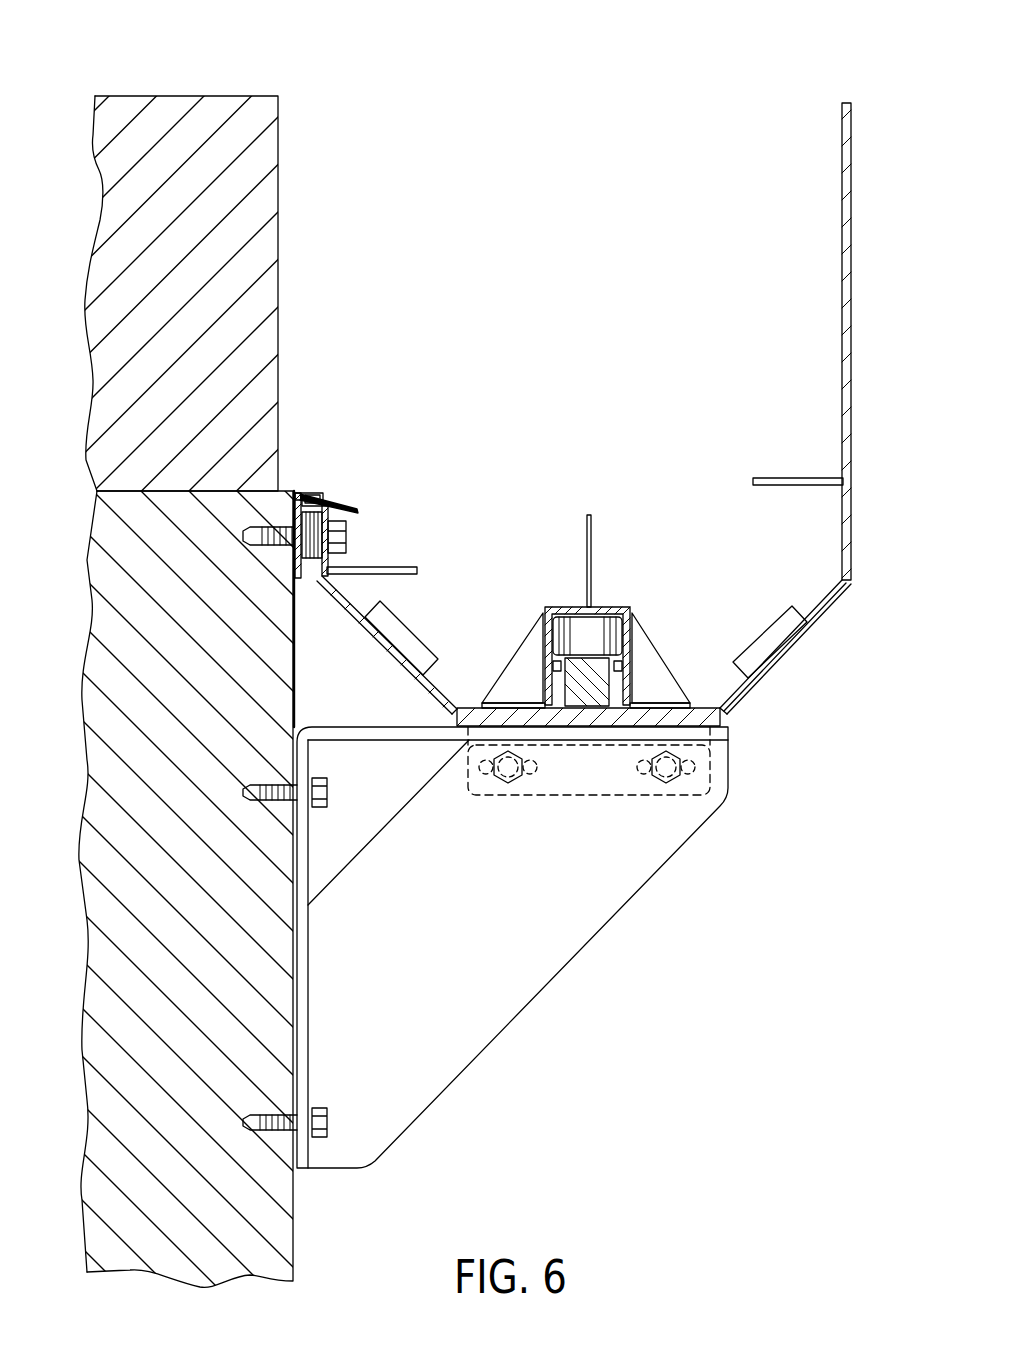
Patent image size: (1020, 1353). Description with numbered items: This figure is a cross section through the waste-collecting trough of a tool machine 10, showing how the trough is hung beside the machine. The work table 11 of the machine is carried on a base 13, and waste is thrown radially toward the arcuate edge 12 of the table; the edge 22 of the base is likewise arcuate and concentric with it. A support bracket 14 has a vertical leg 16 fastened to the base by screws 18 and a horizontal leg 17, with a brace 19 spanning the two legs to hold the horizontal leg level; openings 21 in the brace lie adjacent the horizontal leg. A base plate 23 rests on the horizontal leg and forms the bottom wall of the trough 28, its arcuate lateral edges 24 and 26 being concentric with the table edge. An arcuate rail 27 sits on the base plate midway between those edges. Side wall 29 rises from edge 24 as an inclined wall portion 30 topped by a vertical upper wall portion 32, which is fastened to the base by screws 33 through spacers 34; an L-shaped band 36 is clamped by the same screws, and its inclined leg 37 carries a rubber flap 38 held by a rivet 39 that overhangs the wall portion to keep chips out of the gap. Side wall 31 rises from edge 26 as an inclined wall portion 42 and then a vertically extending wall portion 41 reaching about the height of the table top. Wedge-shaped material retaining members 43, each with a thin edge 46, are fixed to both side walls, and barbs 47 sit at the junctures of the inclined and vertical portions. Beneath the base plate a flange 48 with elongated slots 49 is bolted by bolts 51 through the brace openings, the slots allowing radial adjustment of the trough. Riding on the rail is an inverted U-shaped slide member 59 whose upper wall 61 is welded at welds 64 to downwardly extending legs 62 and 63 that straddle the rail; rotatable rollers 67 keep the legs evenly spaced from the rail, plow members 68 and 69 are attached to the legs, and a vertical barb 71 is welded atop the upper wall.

The tool machine 10 is at (300, 125).
The work table 11 is at (194, 676).
The arcuate edge of the work table 12 is at (282, 240).
The base 13 is at (95, 548).
The support bracket 14 is at (512, 947).
The vertical leg 16 is at (303, 960).
The horizontal leg 17 is at (406, 741).
The screws 18 is at (328, 791).
The brace 19 is at (533, 990).
The openings 21 is at (587, 788).
The edge of the base 22 is at (296, 662).
The base plate 23 is at (700, 718).
The arcuate lateral edge 24 is at (450, 718).
The arcuate lateral edge 26 is at (725, 724).
The arcuate rail 27 is at (602, 668).
The trough 28 is at (604, 378).
The arcuate side wall 29 is at (437, 677).
The inclined wall portion 30 is at (352, 606).
The arcuate side wall 31 is at (808, 408).
The upper wall portion 32 is at (322, 560).
The screws 33 is at (346, 537).
The spacers 34 is at (310, 562).
The L-shaped band 36 is at (304, 493).
The leg of the band 37 is at (334, 500).
The rubber flap 38 is at (360, 510).
The rivet 39 is at (322, 496).
The vertically extending wall portion 41 is at (853, 431).
The inclined wall portion 42 is at (805, 628).
The material retaining members 43 is at (412, 630).
The thin edge 46 is at (423, 656).
The barbs 47 is at (410, 570).
The flange 48 is at (665, 796).
The elongated slots 49 is at (475, 770).
The bolts 51 is at (510, 784).
The inverted U-shaped slide member 59 is at (628, 602).
The upper wall 61 is at (600, 617).
The leg 62 is at (552, 661).
The leg 63 is at (623, 656).
The weld 64 is at (547, 616).
The rotatable rollers 67 is at (580, 635).
The plow member 68 is at (507, 669).
The plow member 69 is at (668, 669).
The vertical barb 71 is at (592, 540).